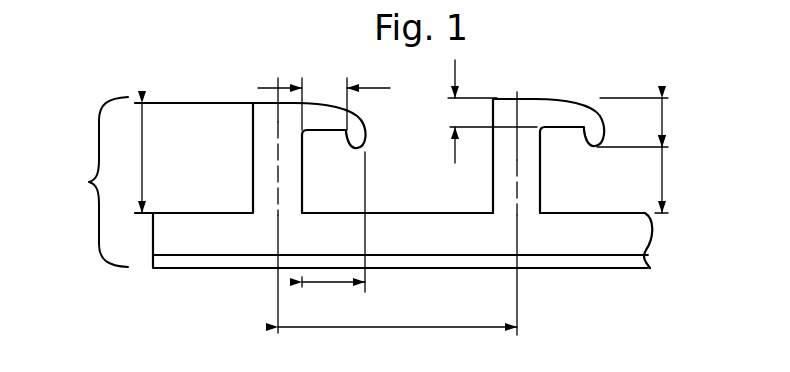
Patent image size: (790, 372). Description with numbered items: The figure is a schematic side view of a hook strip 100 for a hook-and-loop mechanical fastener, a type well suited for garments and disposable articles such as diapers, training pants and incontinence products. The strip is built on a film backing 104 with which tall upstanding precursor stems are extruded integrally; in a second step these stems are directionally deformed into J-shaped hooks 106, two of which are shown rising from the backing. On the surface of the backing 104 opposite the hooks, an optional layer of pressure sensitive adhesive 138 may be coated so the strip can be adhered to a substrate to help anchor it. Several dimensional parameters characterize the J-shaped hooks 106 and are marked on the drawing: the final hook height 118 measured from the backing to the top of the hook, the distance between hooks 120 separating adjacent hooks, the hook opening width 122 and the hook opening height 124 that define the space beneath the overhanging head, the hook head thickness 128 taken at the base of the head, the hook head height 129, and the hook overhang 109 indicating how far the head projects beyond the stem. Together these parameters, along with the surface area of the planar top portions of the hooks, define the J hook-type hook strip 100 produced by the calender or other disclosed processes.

The hook strip 100 is at (95, 182).
The film backing 104 is at (630, 235).
The J-shaped hooks 106 is at (290, 133).
The hook overhang 109 is at (268, 86).
The final hook height 118 is at (145, 157).
The distance between hooks 120 is at (418, 328).
The hook opening width 122 is at (328, 284).
The hook opening height 124 is at (665, 178).
The hook head thickness 128 is at (452, 149).
The hook head height 129 is at (665, 119).
The pressure sensitive adhesive 138 is at (597, 262).